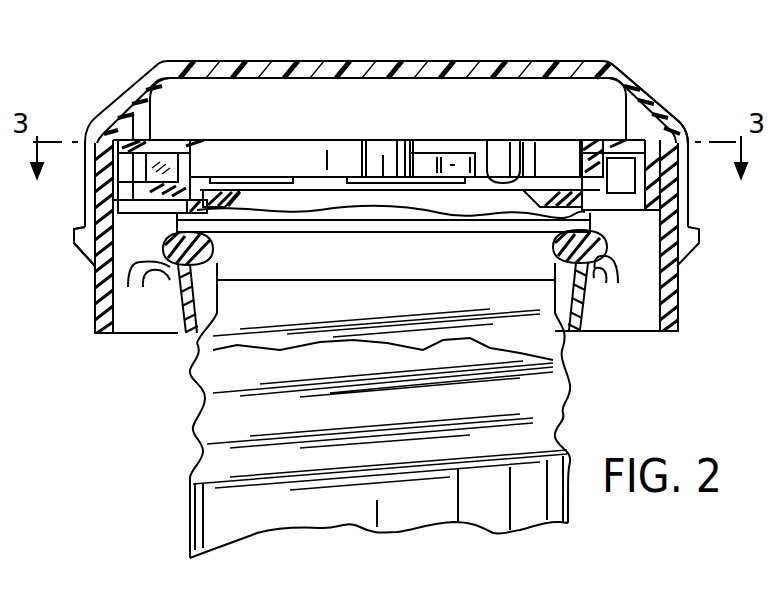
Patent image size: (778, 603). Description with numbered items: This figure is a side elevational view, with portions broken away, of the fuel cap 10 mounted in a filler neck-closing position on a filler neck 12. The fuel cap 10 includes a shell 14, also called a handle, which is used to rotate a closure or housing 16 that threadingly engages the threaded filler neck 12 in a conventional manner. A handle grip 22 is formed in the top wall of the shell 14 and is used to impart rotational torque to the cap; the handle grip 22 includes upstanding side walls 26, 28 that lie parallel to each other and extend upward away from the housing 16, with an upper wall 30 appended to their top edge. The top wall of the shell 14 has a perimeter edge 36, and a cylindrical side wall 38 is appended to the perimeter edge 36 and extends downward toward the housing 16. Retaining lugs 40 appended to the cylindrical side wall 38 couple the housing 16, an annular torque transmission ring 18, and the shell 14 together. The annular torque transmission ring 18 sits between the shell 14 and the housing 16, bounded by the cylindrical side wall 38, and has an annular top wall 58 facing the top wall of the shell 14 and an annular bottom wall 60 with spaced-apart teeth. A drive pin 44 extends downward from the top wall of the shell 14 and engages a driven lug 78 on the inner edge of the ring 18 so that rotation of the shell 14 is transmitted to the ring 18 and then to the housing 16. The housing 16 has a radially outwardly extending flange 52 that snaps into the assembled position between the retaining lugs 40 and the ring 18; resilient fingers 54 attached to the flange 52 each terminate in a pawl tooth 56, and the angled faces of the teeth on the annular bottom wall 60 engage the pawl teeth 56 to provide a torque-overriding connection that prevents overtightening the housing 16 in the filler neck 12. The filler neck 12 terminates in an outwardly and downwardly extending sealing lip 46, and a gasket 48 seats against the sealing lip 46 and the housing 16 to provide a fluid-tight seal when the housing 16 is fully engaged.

The fuel cap 10 is at (677, 81).
The filler neck 12 is at (196, 434).
The shell 14 is at (585, 61).
The housing 16 is at (566, 354).
The annular torque transmission ring 18 is at (260, 152).
The handle grip 22 is at (242, 88).
The upstanding side wall 26 is at (456, 90).
The upstanding side wall 28 is at (456, 90).
The upper wall 30 is at (306, 61).
The perimeter edge 36 is at (680, 138).
The cylindrical side wall 38 is at (100, 280).
The retaining lugs 40 is at (88, 240).
The drive pin 44 is at (384, 152).
The sealing lip 46 is at (165, 282).
The gasket 48 is at (602, 256).
The flange 52 is at (118, 193).
The resilient fingers 54 is at (163, 156).
The pawl tooth 56 is at (624, 184).
The annular top wall 58 is at (350, 152).
The annular bottom wall 60 is at (503, 141).
The driven lug 78 is at (424, 166).